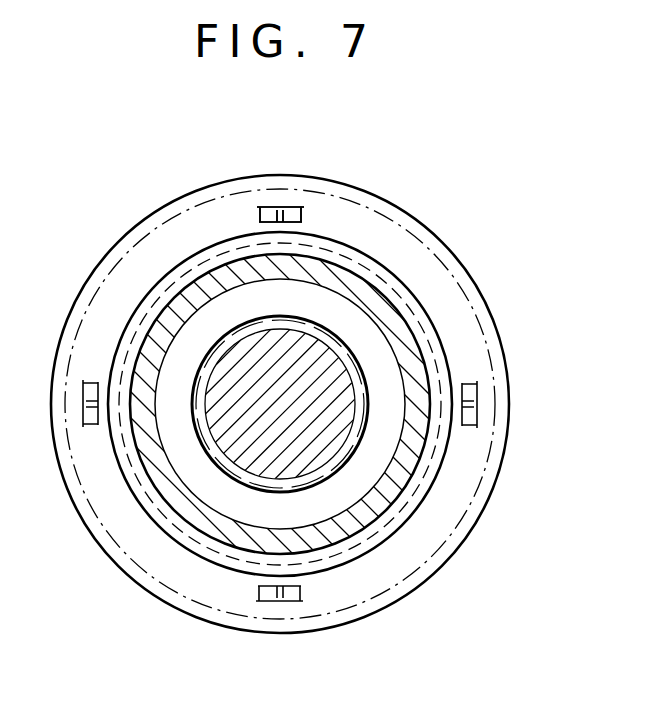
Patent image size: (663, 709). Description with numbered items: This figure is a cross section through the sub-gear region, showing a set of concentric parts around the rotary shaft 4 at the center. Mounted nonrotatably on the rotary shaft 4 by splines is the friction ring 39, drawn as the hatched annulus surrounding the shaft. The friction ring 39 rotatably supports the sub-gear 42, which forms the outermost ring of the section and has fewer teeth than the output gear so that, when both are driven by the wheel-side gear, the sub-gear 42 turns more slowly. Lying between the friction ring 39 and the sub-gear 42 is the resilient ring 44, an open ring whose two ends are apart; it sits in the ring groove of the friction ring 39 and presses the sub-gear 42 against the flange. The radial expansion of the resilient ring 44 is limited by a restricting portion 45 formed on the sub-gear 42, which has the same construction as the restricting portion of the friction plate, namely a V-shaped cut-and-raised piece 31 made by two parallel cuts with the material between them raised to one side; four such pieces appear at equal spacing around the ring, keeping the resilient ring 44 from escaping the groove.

The rotary shaft 4 is at (337, 425).
The cut-and-raised piece 31 is at (285, 207).
The friction ring 39 is at (402, 321).
The sub-gear 42 is at (125, 240).
The resilient ring 44 is at (377, 258).
The restricting portion 45 is at (268, 203).